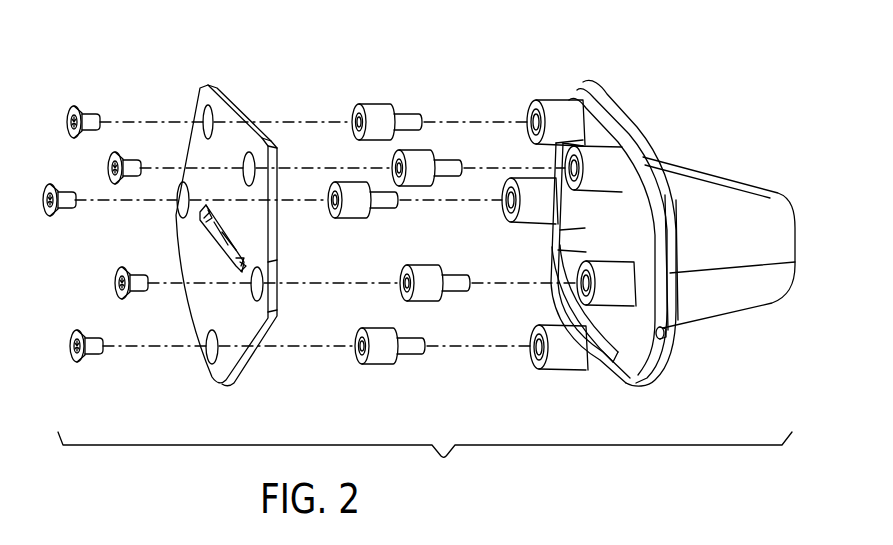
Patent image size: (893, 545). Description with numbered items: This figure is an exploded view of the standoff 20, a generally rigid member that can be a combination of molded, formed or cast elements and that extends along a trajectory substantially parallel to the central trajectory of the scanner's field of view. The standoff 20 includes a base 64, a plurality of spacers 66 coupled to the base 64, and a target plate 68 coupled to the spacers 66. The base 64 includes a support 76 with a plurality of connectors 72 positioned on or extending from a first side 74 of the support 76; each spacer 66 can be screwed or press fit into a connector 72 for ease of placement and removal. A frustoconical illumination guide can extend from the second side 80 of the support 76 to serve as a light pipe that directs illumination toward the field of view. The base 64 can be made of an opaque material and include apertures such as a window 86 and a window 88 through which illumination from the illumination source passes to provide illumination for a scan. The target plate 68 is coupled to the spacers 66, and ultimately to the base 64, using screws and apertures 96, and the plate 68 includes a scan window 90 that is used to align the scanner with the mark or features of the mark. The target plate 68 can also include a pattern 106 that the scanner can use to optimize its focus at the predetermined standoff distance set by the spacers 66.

The standoff 20 is at (444, 459).
The base 64 is at (644, 214).
The spacers 66 is at (373, 113).
The target plate 68 is at (221, 209).
The connectors 72 is at (558, 100).
The first side 74 is at (640, 130).
The support 76 is at (626, 193).
The second side 80 is at (625, 107).
The window 86 is at (613, 330).
The window 88 is at (667, 277).
The scan window 90 is at (225, 238).
The apertures 96 is at (206, 108).
The pattern 106 is at (223, 217).